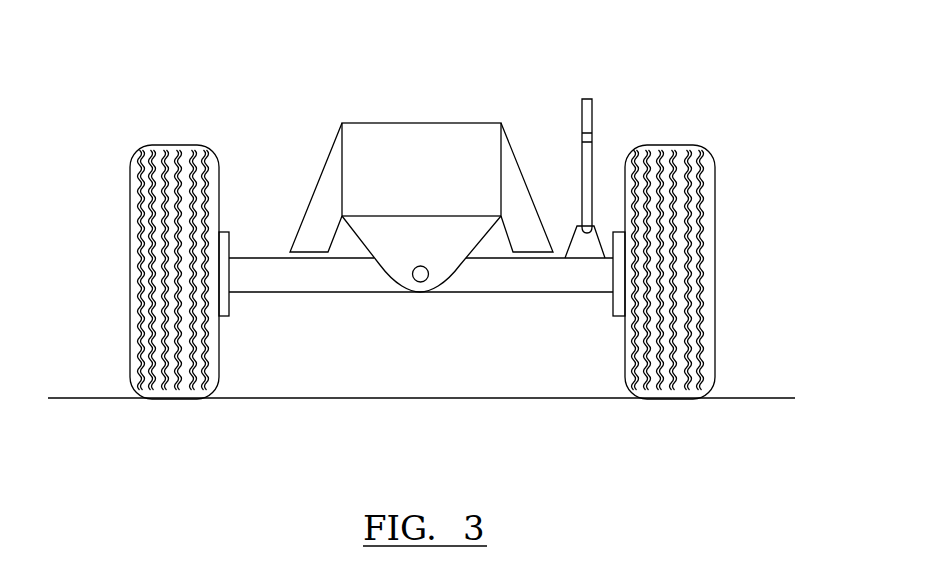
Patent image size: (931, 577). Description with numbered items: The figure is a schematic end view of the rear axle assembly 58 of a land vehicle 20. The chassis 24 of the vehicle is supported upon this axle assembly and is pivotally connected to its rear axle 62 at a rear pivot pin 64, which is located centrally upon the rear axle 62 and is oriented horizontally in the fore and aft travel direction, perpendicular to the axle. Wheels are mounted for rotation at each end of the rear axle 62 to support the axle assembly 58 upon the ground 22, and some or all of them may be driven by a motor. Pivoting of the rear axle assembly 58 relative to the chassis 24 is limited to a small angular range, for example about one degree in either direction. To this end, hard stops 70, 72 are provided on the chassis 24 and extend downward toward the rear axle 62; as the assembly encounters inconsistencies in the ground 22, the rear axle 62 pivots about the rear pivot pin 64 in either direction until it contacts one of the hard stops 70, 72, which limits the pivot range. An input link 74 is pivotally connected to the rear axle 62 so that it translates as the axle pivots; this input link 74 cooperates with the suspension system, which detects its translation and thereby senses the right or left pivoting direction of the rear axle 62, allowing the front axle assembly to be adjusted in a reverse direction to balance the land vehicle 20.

The land vehicle 20 is at (775, 84).
The ground 22 is at (755, 398).
The chassis 24 is at (432, 143).
The rear axle assembly 58 is at (705, 272).
The rear axle 62 is at (263, 284).
The rear pivot pin 64 is at (420, 282).
The hard stop 70 is at (312, 241).
The hard stop 72 is at (532, 241).
The input link 74 is at (588, 155).